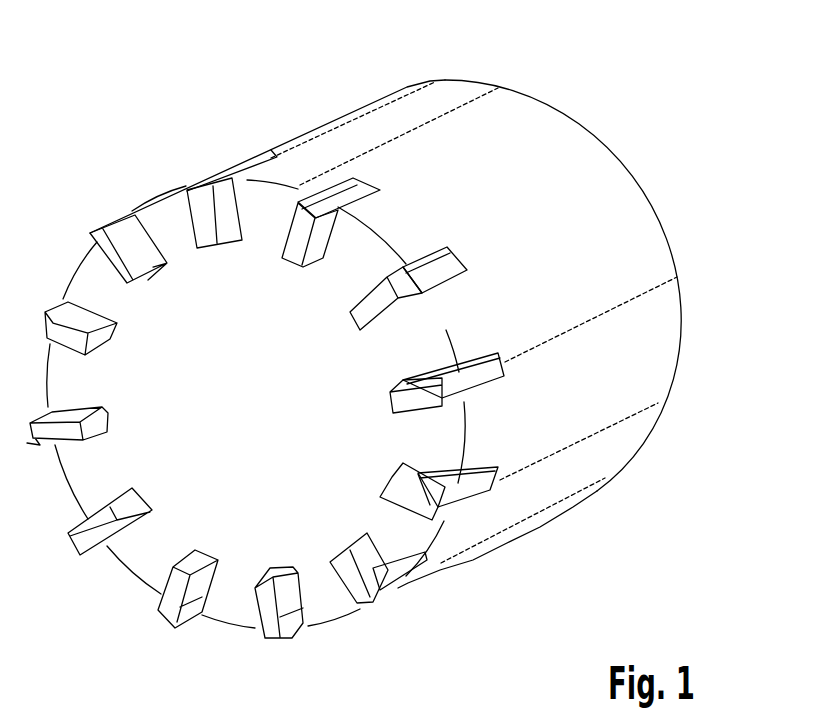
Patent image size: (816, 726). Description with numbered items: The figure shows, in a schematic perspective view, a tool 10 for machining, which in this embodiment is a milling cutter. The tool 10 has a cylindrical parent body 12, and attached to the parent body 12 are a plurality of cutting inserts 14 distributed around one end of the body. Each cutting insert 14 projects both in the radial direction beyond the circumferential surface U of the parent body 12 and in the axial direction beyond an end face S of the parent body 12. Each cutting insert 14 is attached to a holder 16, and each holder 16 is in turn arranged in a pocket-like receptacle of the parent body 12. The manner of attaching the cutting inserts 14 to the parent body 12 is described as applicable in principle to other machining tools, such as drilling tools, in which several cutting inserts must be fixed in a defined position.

The tool 10 is at (100, 98).
The parent body 12 is at (580, 157).
The cutting insert 14 is at (283, 261).
The holder 16 is at (337, 200).
The circumferential surface U is at (360, 128).
The end face S is at (143, 563).